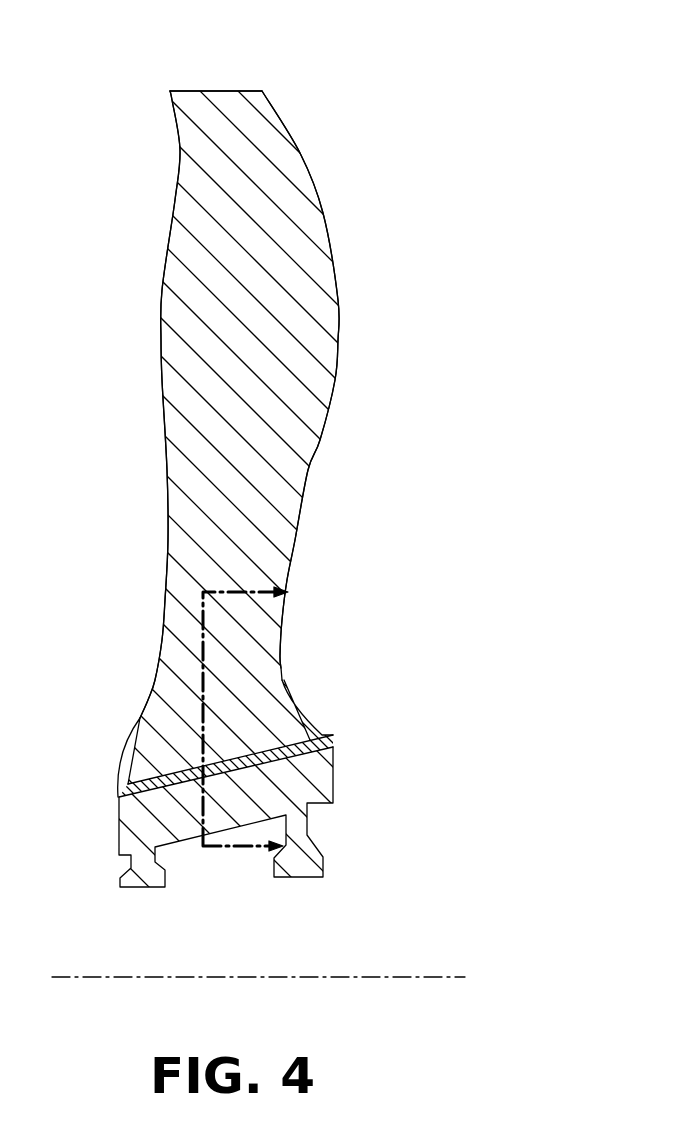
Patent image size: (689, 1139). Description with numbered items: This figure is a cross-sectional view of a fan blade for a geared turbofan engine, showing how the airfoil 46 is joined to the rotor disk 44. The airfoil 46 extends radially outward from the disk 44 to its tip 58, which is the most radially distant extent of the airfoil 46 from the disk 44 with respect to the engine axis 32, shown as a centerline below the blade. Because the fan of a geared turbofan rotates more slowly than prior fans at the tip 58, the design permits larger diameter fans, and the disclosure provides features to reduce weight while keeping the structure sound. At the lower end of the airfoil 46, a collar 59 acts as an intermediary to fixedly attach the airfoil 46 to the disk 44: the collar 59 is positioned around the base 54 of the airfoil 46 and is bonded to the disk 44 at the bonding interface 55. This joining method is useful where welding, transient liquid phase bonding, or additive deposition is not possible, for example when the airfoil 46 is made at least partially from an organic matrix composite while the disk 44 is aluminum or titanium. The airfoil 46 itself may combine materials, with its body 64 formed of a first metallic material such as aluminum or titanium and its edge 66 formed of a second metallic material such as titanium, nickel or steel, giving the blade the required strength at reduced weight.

The engine axis 32 is at (107, 977).
The rotor disk 44 is at (335, 787).
The airfoil 46 is at (310, 569).
The base 54 is at (147, 753).
The bonding interface 55 is at (318, 740).
The tip 58 is at (223, 90).
The collar 59 is at (295, 710).
The body 64 is at (242, 425).
The edge 66 is at (167, 473).